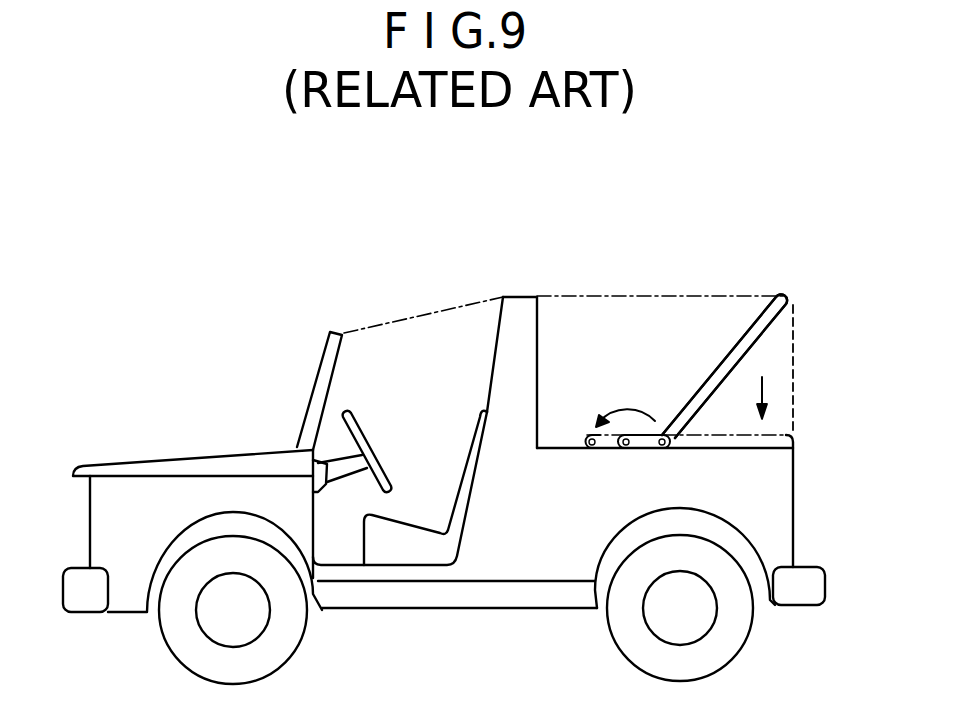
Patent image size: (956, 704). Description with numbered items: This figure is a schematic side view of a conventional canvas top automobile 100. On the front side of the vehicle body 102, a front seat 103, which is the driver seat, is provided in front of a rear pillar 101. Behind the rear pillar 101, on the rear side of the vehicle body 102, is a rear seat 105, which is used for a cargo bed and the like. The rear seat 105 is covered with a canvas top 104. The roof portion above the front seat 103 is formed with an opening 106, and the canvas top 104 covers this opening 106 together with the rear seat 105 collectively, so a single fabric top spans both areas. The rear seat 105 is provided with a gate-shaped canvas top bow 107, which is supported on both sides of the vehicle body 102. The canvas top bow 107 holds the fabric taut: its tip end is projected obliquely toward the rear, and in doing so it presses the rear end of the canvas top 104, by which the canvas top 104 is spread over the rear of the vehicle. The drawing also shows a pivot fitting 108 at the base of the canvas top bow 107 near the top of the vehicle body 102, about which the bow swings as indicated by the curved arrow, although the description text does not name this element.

The canvas top automobile 100 is at (627, 297).
The rear pillar 101 is at (518, 308).
The vehicle body 102 is at (512, 565).
The front seat 103 is at (450, 397).
The canvas top 104 is at (735, 297).
The rear seat 105 is at (646, 373).
The opening 106 is at (428, 322).
The canvas top bow 107 is at (750, 348).
The hinge 108 is at (640, 448).